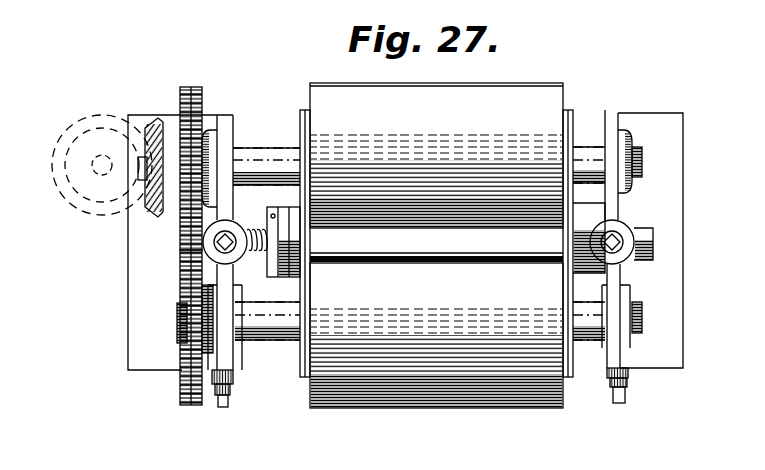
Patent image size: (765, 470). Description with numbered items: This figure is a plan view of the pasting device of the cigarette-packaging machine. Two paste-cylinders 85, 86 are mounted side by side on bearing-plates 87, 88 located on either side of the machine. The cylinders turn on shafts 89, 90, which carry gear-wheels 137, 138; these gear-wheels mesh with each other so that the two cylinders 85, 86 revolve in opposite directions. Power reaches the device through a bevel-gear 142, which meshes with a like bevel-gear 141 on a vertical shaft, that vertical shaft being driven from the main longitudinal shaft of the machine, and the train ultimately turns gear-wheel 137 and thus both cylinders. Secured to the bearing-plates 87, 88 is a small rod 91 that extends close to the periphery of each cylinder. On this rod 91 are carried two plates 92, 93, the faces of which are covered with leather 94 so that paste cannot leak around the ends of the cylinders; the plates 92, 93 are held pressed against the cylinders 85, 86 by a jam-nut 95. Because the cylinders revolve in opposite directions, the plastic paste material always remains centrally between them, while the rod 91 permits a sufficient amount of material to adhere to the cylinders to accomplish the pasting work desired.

The bevel-gear 141 is at (85, 137).
The bevel-gear 142 is at (112, 213).
The gear-wheel 137 is at (197, 86).
The gear-wheel 138 is at (195, 407).
The paste-cylinder 85 is at (436, 155).
The paste-cylinder 86 is at (436, 335).
The bearing-plate 87 is at (227, 138).
The bearing-plate 88 is at (610, 115).
The shaft 89 is at (642, 161).
The shaft 90 is at (642, 311).
The rod 91 is at (436, 245).
The plate 92 is at (303, 364).
The plate 93 is at (572, 377).
The leather 94 is at (311, 278).
The jam-nut 95 is at (271, 270).